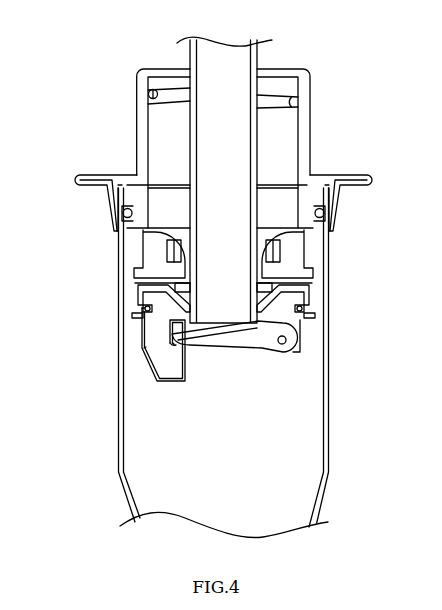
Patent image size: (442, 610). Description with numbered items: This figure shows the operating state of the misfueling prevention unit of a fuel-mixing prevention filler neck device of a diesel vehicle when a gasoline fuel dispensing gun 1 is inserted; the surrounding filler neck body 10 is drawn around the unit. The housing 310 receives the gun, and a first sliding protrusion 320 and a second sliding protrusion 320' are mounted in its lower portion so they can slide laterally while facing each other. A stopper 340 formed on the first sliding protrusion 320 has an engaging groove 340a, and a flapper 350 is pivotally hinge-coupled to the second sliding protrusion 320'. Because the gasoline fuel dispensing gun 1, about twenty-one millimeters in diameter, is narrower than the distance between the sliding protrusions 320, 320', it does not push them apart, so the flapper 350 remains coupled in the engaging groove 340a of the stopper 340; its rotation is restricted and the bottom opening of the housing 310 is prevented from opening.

The gasoline fuel dispensing gun 1 is at (257, 126).
The body housing 10 is at (120, 269).
The housing 310 is at (292, 249).
The first sliding protrusion 320 is at (116, 301).
The second sliding protrusion 320' is at (326, 318).
The stopper 340 is at (162, 370).
The engaging groove 340a is at (173, 339).
The flapper 350 is at (227, 333).